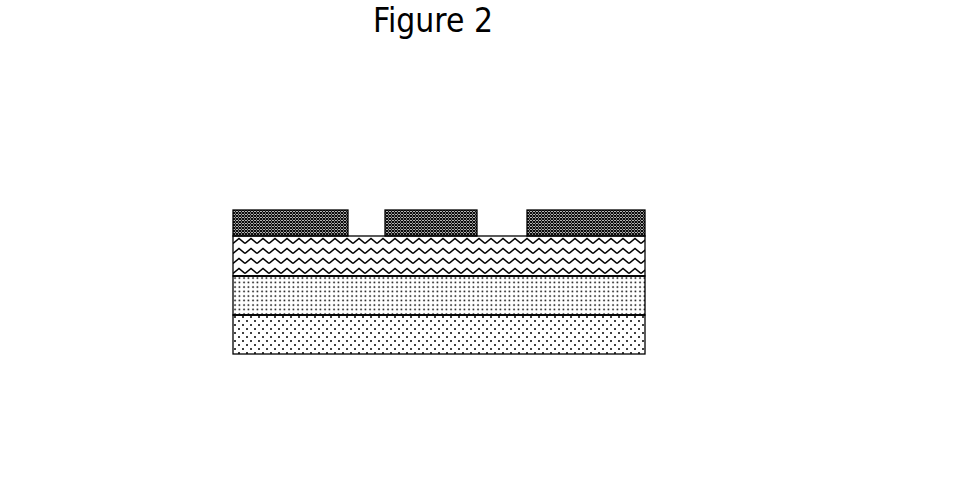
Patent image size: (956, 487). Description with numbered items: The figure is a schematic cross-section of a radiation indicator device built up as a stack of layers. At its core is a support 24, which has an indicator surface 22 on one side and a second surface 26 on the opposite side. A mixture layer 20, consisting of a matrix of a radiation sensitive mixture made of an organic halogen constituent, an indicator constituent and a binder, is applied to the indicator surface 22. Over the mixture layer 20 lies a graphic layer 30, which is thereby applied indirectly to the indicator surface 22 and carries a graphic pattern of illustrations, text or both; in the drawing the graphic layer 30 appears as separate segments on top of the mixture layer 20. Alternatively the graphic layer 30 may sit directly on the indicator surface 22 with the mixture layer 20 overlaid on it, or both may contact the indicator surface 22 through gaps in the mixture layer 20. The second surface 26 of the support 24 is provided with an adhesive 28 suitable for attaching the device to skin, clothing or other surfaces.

The mixture layer 20 is at (637, 250).
The indicator surface 22 is at (223, 270).
The support 24 is at (638, 298).
The second surface 26 is at (222, 322).
The adhesive 28 is at (623, 349).
The graphic layer 30 is at (342, 217).